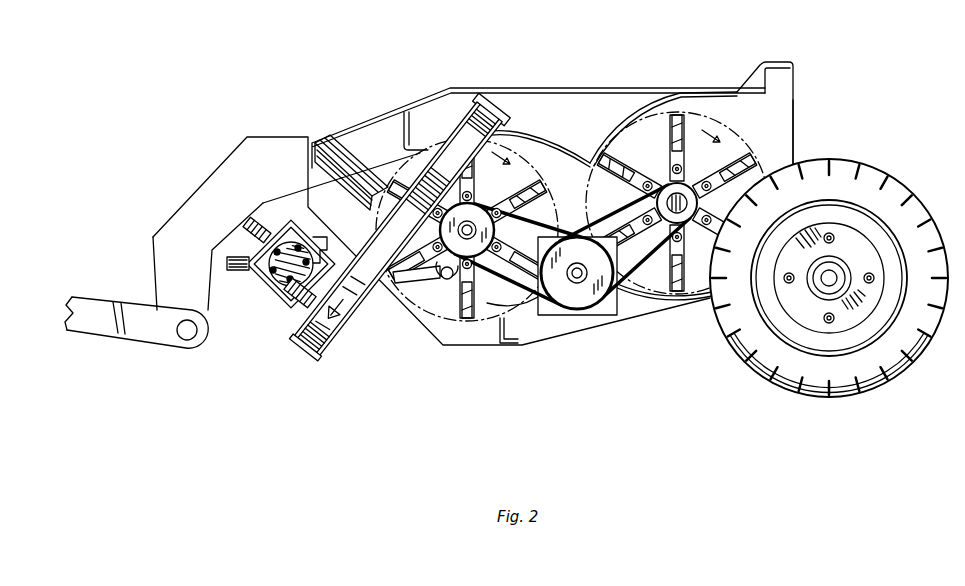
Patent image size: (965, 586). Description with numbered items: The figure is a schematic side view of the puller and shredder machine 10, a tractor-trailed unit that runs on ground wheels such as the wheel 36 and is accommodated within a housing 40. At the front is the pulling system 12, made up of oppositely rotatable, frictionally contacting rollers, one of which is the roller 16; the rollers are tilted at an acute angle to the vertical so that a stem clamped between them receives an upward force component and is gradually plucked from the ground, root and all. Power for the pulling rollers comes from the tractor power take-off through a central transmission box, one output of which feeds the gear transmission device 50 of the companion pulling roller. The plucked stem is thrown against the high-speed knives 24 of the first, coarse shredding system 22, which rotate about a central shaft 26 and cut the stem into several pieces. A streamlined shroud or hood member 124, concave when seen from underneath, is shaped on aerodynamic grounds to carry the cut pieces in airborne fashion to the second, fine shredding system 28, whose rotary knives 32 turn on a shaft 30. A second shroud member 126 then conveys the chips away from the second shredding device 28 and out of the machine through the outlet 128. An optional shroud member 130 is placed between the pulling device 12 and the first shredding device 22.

The puller and shredder machine 10 is at (363, 57).
The pulling system 12 is at (313, 391).
The roller 16 is at (299, 347).
The first, coarse shredding system 22 is at (403, 345).
The knives 24 is at (467, 320).
The central shaft 26 is at (438, 234).
The second, fine shredding system 28 is at (676, 319).
The shaft 30 is at (664, 181).
The rotary knives 32 is at (688, 124).
The ground wheel 36 is at (802, 396).
The housing 40 is at (455, 90).
The gear transmission device 50 is at (265, 283).
The shroud or hood member 124 is at (537, 140).
The second shroud member 126 is at (614, 128).
The outlet 128 is at (796, 132).
The shroud member 130 is at (276, 199).